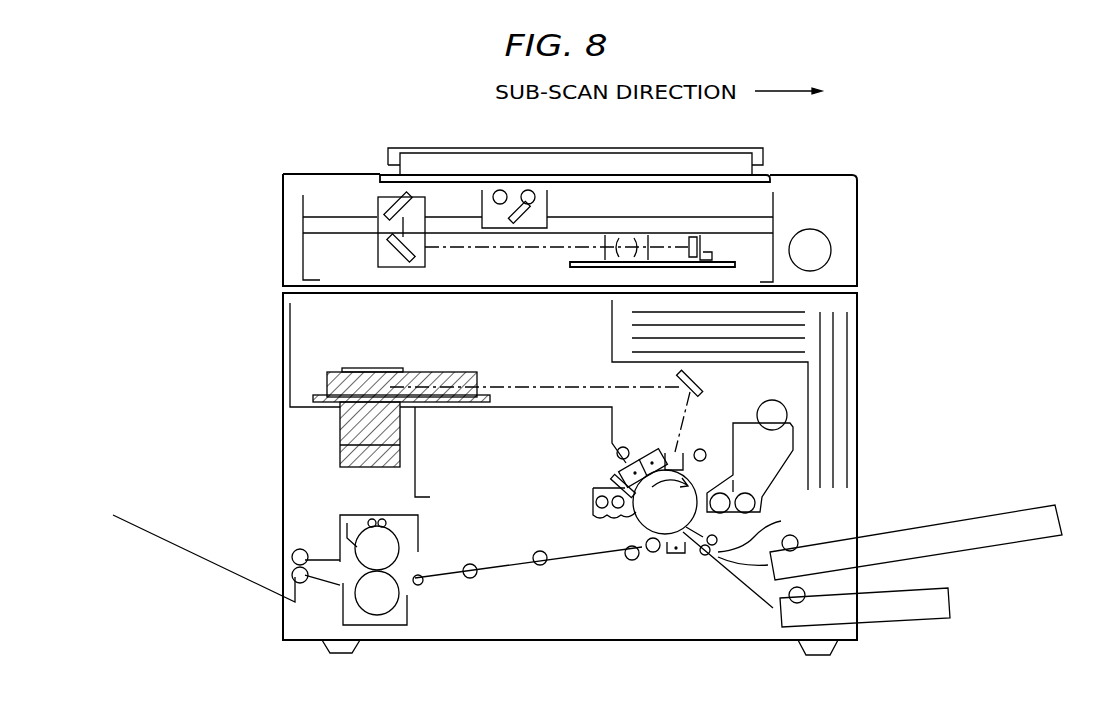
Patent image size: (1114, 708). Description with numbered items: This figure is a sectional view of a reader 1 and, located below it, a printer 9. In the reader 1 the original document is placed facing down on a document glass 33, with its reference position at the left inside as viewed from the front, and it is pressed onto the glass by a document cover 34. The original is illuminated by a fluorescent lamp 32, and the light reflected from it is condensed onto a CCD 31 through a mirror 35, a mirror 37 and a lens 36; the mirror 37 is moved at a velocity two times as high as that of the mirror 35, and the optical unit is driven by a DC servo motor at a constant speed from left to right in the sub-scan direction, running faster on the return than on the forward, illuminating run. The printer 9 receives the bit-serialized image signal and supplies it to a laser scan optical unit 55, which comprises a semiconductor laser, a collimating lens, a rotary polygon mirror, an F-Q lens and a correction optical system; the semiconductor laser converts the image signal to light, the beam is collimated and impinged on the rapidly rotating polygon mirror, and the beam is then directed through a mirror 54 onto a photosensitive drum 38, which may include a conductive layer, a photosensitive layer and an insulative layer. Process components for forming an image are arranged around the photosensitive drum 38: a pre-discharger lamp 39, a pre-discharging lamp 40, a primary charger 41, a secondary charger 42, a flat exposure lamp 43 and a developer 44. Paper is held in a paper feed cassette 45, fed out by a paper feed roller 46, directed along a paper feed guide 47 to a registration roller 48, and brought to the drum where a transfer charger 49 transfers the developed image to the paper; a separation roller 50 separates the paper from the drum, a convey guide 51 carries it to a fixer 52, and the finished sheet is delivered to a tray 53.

The reader 1 is at (857, 206).
The printer 9 is at (857, 371).
The CCD 31 is at (706, 246).
The fluorescent lamp 32 is at (528, 190).
The document glass 33 is at (646, 176).
The document cover 34 is at (752, 164).
The mirror 35 is at (380, 201).
The lens 36 is at (629, 236).
The mirror 37 is at (524, 218).
The photosensitive drum 38 is at (640, 513).
The pre-discharger lamp 39 is at (616, 478).
The pre-discharging lamp 40 is at (623, 447).
The primary charger 41 is at (655, 455).
The secondary charger 42 is at (681, 450).
The flat exposure lamp 43 is at (705, 449).
The developer 44 is at (768, 487).
The paper feed cassette 45 is at (840, 537).
The paper feed roller 46 is at (800, 526).
The paper feed guide 47 is at (746, 568).
The registration roller 48 is at (706, 556).
The transfer charger 49 is at (677, 556).
The separation roller 50 is at (652, 553).
The convey guide 51 is at (573, 557).
The fixer 52 is at (390, 545).
The tray 53 is at (205, 555).
The mirror 54 is at (704, 385).
The laser scan optical unit 55 is at (451, 373).